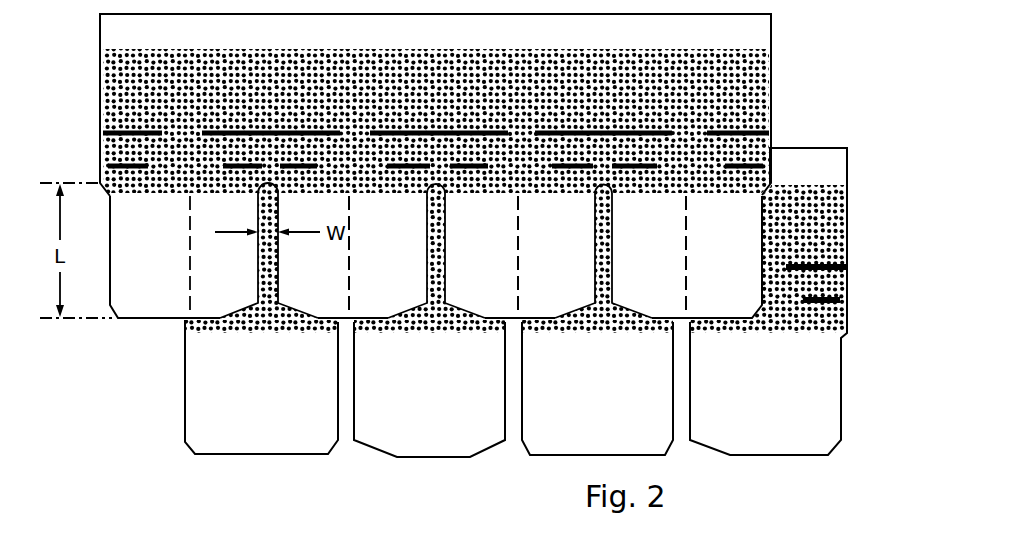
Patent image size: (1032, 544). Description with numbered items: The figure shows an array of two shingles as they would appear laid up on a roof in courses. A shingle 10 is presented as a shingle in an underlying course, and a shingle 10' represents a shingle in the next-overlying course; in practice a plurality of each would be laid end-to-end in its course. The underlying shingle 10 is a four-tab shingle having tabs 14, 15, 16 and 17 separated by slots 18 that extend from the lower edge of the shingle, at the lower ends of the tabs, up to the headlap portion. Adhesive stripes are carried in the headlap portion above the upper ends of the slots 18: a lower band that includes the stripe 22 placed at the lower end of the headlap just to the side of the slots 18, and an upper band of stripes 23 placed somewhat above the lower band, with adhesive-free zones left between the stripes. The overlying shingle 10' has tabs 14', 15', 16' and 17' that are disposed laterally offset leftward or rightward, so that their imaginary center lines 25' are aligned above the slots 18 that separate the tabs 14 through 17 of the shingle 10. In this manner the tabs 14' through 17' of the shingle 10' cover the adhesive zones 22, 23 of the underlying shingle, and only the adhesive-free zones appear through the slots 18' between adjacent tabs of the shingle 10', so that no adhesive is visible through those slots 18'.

The shingle in next-overlying course 10' is at (468, 166).
The shingle 10 is at (545, 278).
The tab 14 is at (768, 301).
The tab 15 is at (597, 388).
The tab 16 is at (429, 389).
The tab 17 is at (261, 387).
The tab of overlying shingle 14' is at (707, 257).
The tab of overlying shingle 15' is at (520, 257).
The tab of overlying shingle 16' is at (353, 257).
The tab of overlying shingle 17' is at (165, 257).
The slot 18 is at (533, 412).
The slot of overlying shingle 18' is at (436, 276).
The adhesive stripe 22 is at (847, 297).
The adhesive stripe 23 is at (847, 267).
The center line of overlying shingle tab 25' is at (544, 256).